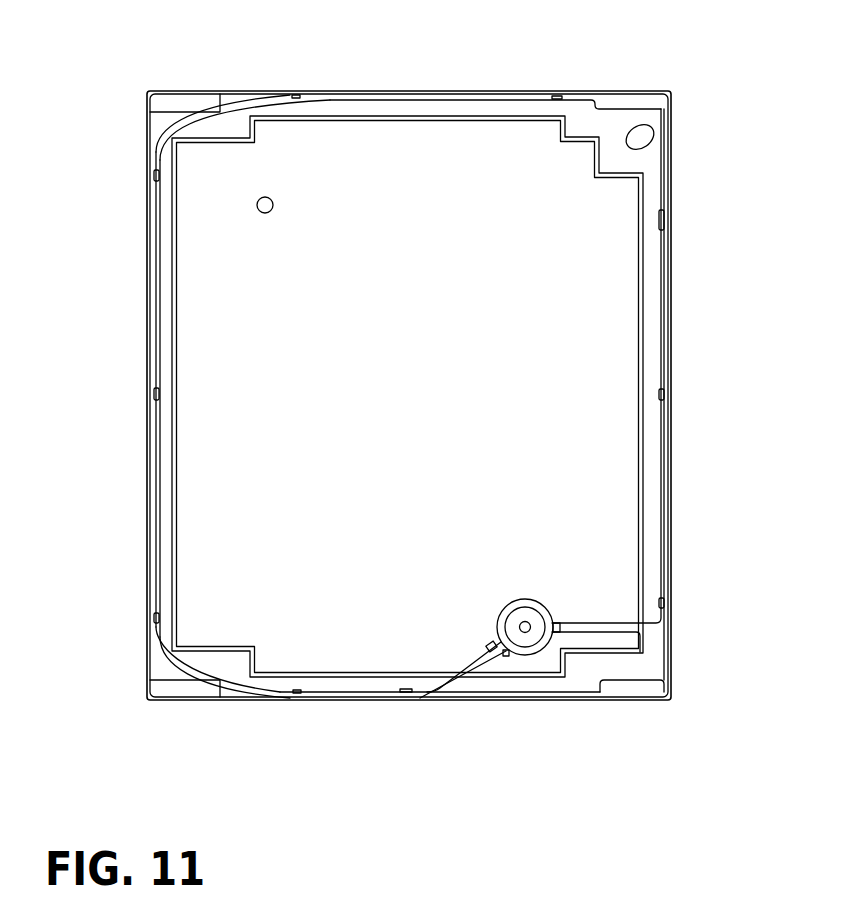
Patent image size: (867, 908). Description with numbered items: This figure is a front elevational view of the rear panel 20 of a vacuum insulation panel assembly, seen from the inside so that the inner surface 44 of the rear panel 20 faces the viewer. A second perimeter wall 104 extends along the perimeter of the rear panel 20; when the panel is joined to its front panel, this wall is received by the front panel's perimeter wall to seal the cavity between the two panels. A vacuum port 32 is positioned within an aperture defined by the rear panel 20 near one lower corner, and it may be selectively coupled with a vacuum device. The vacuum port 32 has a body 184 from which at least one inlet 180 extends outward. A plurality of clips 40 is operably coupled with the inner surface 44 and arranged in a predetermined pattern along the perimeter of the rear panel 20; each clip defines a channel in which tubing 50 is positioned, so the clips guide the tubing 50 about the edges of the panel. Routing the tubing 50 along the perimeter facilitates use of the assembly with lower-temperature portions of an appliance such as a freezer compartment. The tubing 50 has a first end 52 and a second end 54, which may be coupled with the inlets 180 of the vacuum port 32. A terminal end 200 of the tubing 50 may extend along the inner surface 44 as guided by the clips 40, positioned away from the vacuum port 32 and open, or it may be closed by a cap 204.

The rear panel 20 is at (472, 162).
The vacuum port 32 is at (527, 640).
The plurality of clips 40 is at (155, 395).
The inner surface 44 is at (535, 322).
The tubing 50 is at (148, 502).
The first end 52 is at (493, 650).
The second end 54 is at (568, 626).
The second perimeter wall 104 is at (148, 135).
The inlet 180 is at (506, 656).
The body 184 is at (540, 612).
The terminal end 200 is at (664, 222).
The cap 204 is at (662, 210).